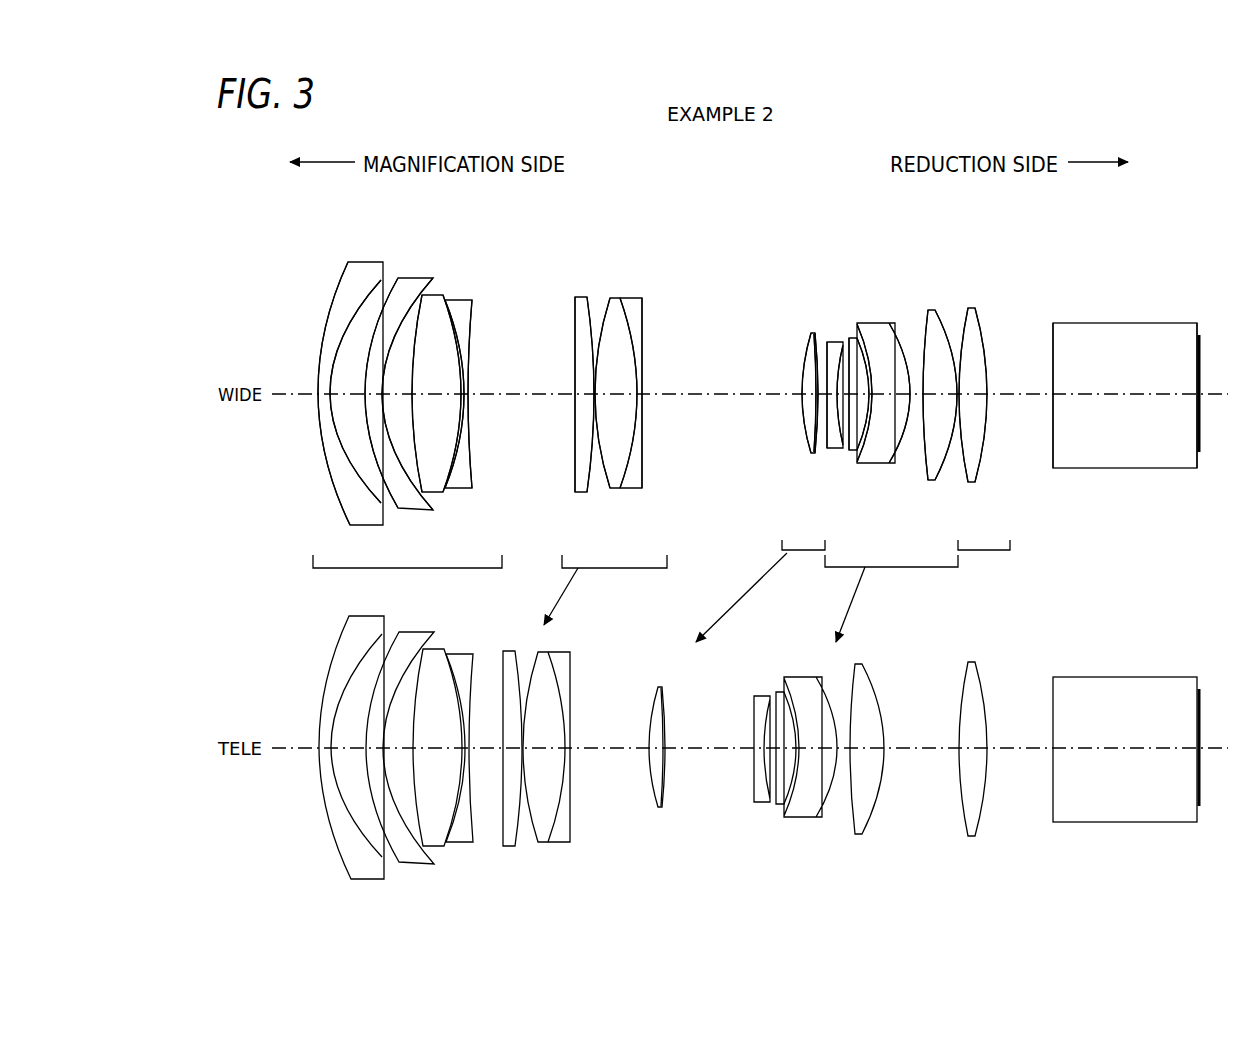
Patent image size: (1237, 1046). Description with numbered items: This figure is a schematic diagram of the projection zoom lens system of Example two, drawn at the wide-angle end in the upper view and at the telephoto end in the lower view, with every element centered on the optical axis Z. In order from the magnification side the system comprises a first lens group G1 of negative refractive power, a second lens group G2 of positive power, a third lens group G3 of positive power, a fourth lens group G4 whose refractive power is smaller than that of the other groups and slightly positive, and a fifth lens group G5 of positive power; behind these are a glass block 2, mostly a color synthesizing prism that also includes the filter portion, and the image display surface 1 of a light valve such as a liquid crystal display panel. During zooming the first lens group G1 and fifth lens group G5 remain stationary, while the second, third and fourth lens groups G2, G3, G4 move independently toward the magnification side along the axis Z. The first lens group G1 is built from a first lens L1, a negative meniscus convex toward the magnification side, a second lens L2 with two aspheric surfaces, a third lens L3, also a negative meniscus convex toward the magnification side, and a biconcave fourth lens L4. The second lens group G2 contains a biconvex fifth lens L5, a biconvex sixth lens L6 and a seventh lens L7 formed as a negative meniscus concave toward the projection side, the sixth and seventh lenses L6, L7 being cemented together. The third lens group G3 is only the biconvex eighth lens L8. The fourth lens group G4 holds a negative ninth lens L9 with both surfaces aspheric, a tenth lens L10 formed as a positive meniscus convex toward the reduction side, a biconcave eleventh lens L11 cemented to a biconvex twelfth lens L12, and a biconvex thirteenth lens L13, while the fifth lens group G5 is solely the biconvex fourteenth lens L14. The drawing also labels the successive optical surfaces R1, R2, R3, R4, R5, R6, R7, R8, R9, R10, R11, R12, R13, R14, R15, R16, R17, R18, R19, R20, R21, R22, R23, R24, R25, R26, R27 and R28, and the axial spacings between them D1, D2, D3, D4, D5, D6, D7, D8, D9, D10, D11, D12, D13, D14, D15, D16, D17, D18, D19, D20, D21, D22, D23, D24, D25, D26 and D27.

The first lens L1 is at (360, 268).
The second lens L2 is at (412, 285).
The third lens L3 is at (438, 300).
The fourth lens L4 is at (475, 303).
The fifth lens L5 is at (579, 298).
The sixth lens L6 is at (612, 300).
The seventh lens L7 is at (636, 302).
The eighth lens L8 is at (805, 345).
The ninth lens L9 is at (812, 333).
The tenth lens L10 is at (832, 343).
The eleventh lens L11 is at (854, 336).
The twelfth lens L12 is at (882, 322).
The thirteenth lens L13 is at (935, 310).
The fourteenth lens L14 is at (976, 308).
The lens surface 1 R1 is at (316, 385).
The lens surface 2 R2 is at (338, 355).
The lens surface 3 R3 is at (364, 350).
The lens surface 4 R4 is at (380, 396).
The lens surface 5 R5 is at (414, 352).
The lens surface 6 R6 is at (414, 388).
The lens surface 7 R7 is at (443, 332).
The lens surface 8 R8 is at (468, 382).
The lens surface 9 R9 is at (575, 386).
The lens surface 10 R10 is at (594, 335).
The lens surface 11 R11 is at (601, 312).
The lens surface 12 R12 is at (636, 340).
The lens surface 13 R13 is at (644, 372).
The lens surface 14 R14 is at (800, 388).
The lens surface 15 R15 is at (812, 394).
The lens surface 16 R16 is at (818, 334).
The lens surface 17 R17 is at (830, 345).
The lens surface 18 R18 is at (843, 345).
The lens surface 19 R19 is at (849, 340).
The lens surface 20 R20 is at (862, 340).
The lens surface 21 R21 is at (866, 330).
The lens surface 22 R22 is at (904, 330).
The lens surface 23 R23 is at (928, 335).
The lens surface 24 R24 is at (945, 330).
The lens surface 25 R25 is at (960, 352).
The lens surface 26 R26 is at (989, 388).
The glass block entrance surface R27 is at (1052, 338).
The glass block exit surface R28 is at (1200, 328).
The surface spacing 1 D1 is at (320, 407).
The surface spacing 2 D2 is at (347, 413).
The surface spacing 3 D3 is at (399, 445).
The surface spacing 4 D4 is at (395, 413).
The surface spacing 5 D5 is at (438, 435).
The surface spacing 6 D6 is at (438, 413).
The surface spacing 7 D7 is at (472, 412).
The surface spacing 8 D8 is at (497, 413).
The surface spacing 9 D9 is at (578, 407).
The surface spacing 10 D10 is at (582, 418).
The surface spacing 11 D11 is at (617, 413).
The surface spacing 12 D12 is at (646, 410).
The surface spacing 13 D13 is at (720, 413).
The surface spacing 14 D14 is at (804, 408).
The surface spacing 15 D15 is at (814, 440).
The surface spacing 16 D16 is at (826, 445).
The surface spacing 17 D17 is at (845, 450).
The surface spacing 18 D18 is at (852, 450).
The surface spacing 19 D19 is at (868, 452).
The surface spacing 20 D20 is at (885, 452).
The surface spacing 21 D21 is at (915, 455).
The surface spacing 22 D22 is at (940, 468).
The surface spacing 23 D23 is at (965, 470).
The surface spacing 24 D24 is at (982, 452).
The surface spacing 25 D25 is at (990, 420).
The surface spacing 26 D26 is at (1022, 413).
The glass block thickness D27 is at (1117, 413).
The first lens group G1 is at (407, 579).
The second lens group G2 is at (614, 579).
The third lens group G3 is at (803, 564).
The fourth lens group G4 is at (891, 579).
The fifth lens group G5 is at (984, 564).
The optical axis Z is at (296, 405).
The image display surface 1 is at (1200, 450).
The glass block 2 is at (1148, 333).